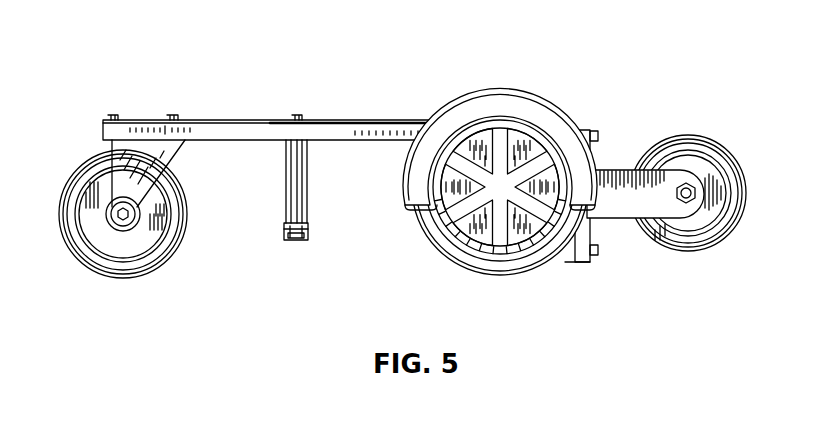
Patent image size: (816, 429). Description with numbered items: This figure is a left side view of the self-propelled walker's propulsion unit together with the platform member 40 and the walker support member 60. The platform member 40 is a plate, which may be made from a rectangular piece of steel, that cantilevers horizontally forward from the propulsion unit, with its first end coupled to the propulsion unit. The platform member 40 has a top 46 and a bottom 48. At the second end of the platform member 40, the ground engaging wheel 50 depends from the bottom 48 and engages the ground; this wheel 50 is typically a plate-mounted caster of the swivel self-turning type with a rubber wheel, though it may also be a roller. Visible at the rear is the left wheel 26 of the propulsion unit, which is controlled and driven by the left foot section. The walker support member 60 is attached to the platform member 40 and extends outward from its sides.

The platform member 40 is at (246, 178).
The top 46 is at (244, 121).
The bottom 48 is at (242, 141).
The ground engaging wheel 50 is at (124, 278).
The walker support member 60 is at (295, 252).
The left wheel 26 is at (499, 278).